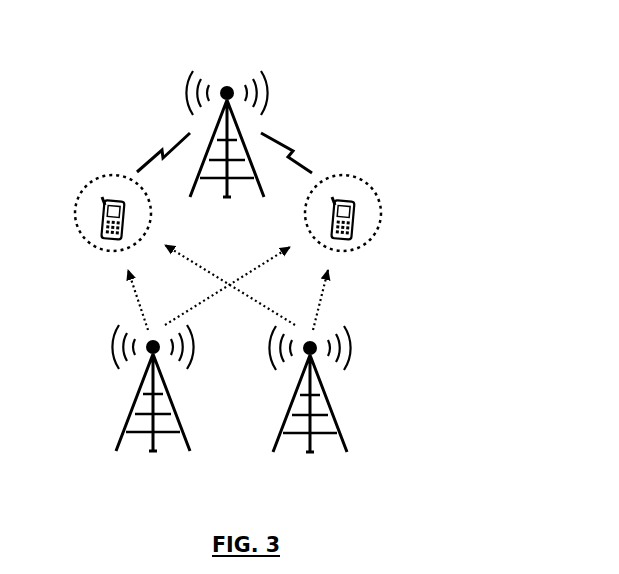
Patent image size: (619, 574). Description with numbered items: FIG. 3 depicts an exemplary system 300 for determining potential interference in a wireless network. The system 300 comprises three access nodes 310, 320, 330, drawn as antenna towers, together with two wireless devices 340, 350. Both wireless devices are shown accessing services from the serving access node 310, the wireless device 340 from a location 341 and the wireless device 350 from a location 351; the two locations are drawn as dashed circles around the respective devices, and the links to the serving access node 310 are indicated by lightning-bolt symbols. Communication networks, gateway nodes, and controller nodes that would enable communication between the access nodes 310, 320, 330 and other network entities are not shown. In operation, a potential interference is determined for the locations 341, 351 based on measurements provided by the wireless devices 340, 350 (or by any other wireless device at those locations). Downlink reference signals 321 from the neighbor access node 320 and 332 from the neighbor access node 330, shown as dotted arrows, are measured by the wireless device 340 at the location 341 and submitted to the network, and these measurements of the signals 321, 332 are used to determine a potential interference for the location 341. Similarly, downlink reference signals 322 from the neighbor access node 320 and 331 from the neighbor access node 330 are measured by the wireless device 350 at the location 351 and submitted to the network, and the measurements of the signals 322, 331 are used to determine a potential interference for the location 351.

The system 300 is at (473, 50).
The access node 310 is at (225, 88).
The access node 320 is at (135, 425).
The access node 330 is at (330, 427).
The wireless device 340 is at (98, 207).
The location 341 is at (103, 176).
The wireless device 350 is at (358, 210).
The location 351 is at (365, 181).
The downlink reference signal 321 is at (125, 283).
The downlink reference signal 322 is at (202, 293).
The downlink reference signal 331 is at (323, 283).
The downlink reference signal 332 is at (247, 292).